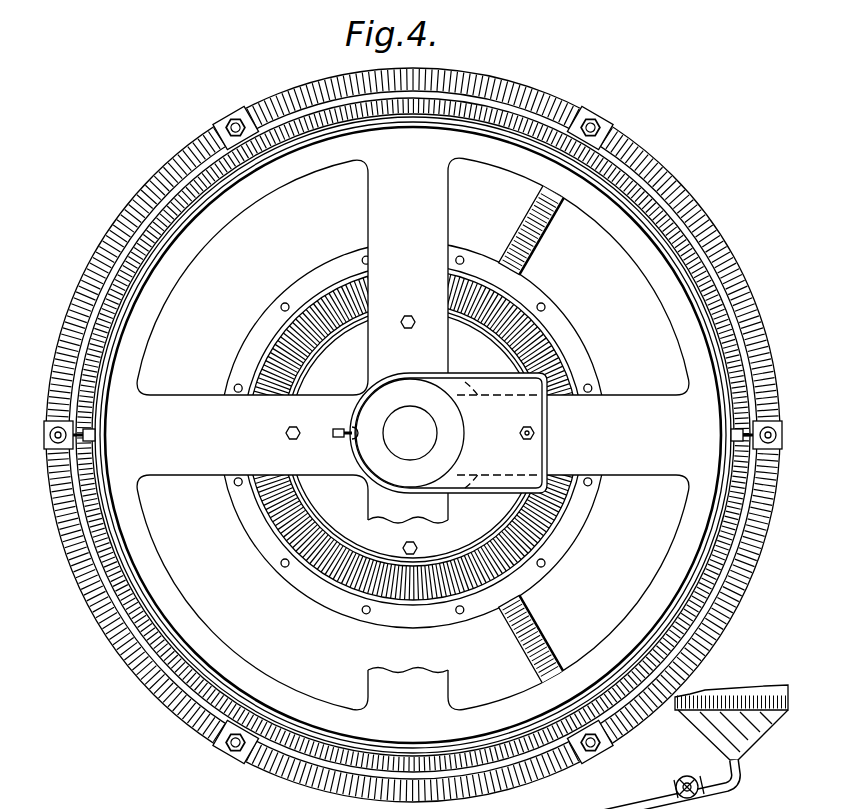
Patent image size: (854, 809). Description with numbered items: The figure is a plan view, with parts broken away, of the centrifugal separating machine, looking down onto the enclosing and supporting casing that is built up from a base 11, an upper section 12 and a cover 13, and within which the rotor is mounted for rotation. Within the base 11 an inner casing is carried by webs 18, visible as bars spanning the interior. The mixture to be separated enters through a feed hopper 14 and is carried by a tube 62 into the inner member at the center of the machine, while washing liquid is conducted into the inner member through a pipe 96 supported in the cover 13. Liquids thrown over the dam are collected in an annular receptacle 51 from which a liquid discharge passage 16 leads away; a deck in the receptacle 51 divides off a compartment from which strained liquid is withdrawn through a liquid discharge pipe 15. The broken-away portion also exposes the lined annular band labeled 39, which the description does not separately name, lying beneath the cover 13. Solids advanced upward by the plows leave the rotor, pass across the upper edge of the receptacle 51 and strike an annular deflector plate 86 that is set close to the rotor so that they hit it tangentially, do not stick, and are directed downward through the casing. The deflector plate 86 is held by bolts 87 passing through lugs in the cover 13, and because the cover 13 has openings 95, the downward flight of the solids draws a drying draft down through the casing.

The base 11 is at (162, 692).
The upper section 12 is at (118, 565).
The cover 13 is at (413, 434).
The feed hopper 14 is at (548, 418).
The liquid discharge pipe 15 is at (757, 413).
The liquid discharge passage 16 is at (768, 478).
The webs 18 is at (537, 228).
The brake lining 39 is at (405, 590).
The annular receptacle 51 is at (407, 417).
The tube 62 is at (437, 433).
The annular deflector plate 86 is at (328, 342).
The bolts 87 is at (288, 440).
The openings 95 is at (283, 583).
The pipe 96 is at (342, 438).